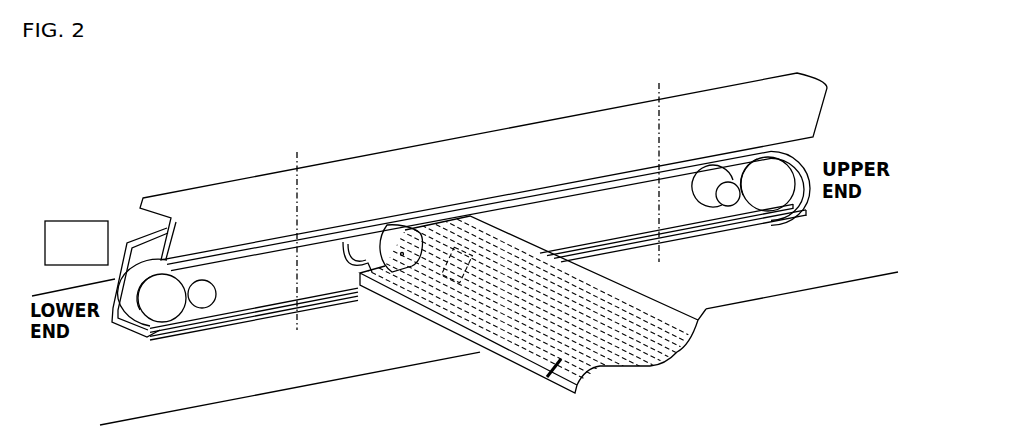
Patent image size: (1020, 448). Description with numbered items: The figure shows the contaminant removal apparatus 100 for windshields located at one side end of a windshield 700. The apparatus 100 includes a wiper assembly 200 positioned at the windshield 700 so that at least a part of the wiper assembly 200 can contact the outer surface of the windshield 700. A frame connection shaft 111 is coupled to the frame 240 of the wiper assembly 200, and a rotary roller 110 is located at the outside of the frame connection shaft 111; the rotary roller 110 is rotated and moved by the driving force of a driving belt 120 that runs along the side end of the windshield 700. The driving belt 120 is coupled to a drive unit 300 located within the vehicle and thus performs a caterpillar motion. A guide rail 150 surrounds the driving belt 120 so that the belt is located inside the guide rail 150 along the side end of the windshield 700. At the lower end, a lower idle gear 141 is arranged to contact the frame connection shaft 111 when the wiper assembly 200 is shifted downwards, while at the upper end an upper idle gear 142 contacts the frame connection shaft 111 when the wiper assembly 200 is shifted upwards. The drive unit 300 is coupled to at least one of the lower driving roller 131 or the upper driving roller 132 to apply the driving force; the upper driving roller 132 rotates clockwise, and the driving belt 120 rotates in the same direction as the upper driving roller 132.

The contaminant removal apparatus 100 is at (464, 100).
The rotary roller 110 is at (345, 266).
The frame connection shaft 111 is at (413, 262).
The driving belt 120 is at (134, 313).
The lower driving roller 131 is at (164, 318).
The upper driving roller 132 is at (777, 188).
The lower idle gear 141 is at (203, 303).
The upper idle gear 142 is at (720, 206).
The guide rail 150 is at (227, 191).
The wiper assembly 200 is at (545, 380).
The frame 240 is at (643, 333).
The drive unit 300 is at (79, 221).
The windshield 700 is at (773, 287).